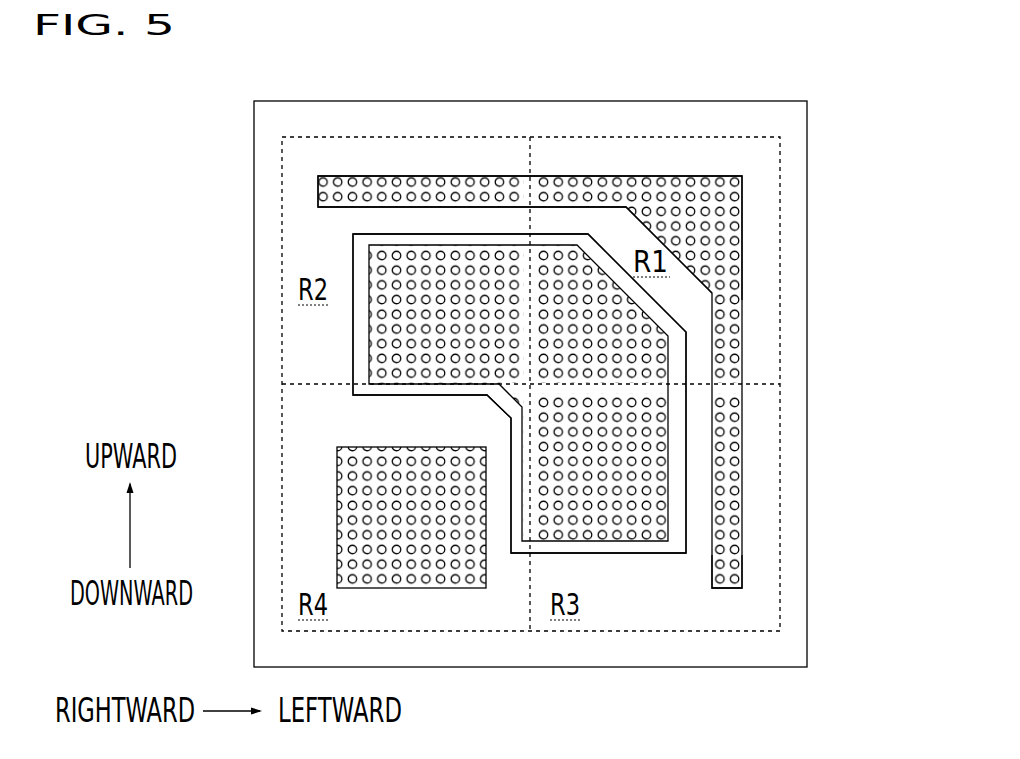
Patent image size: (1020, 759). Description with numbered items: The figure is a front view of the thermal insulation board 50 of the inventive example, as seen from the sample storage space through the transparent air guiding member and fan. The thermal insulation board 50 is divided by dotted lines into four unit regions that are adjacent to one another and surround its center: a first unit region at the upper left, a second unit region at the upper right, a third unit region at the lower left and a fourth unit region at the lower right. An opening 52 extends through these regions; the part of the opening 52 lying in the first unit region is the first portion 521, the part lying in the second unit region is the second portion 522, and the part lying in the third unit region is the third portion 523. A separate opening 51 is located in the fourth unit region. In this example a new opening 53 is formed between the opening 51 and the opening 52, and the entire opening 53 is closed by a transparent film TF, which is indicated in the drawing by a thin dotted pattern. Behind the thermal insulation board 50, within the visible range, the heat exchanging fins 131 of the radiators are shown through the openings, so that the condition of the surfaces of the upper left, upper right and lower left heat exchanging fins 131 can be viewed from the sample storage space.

The thermal insulation board 50 is at (788, 647).
The opening 51 is at (477, 598).
The opening 52 is at (708, 560).
The opening 53 is at (663, 523).
The first portion 521 is at (613, 190).
The second portion 522 is at (393, 197).
The third portion 523 is at (742, 588).
The heat exchanging fins 131 is at (350, 190).
The transparent film TF is at (672, 377).